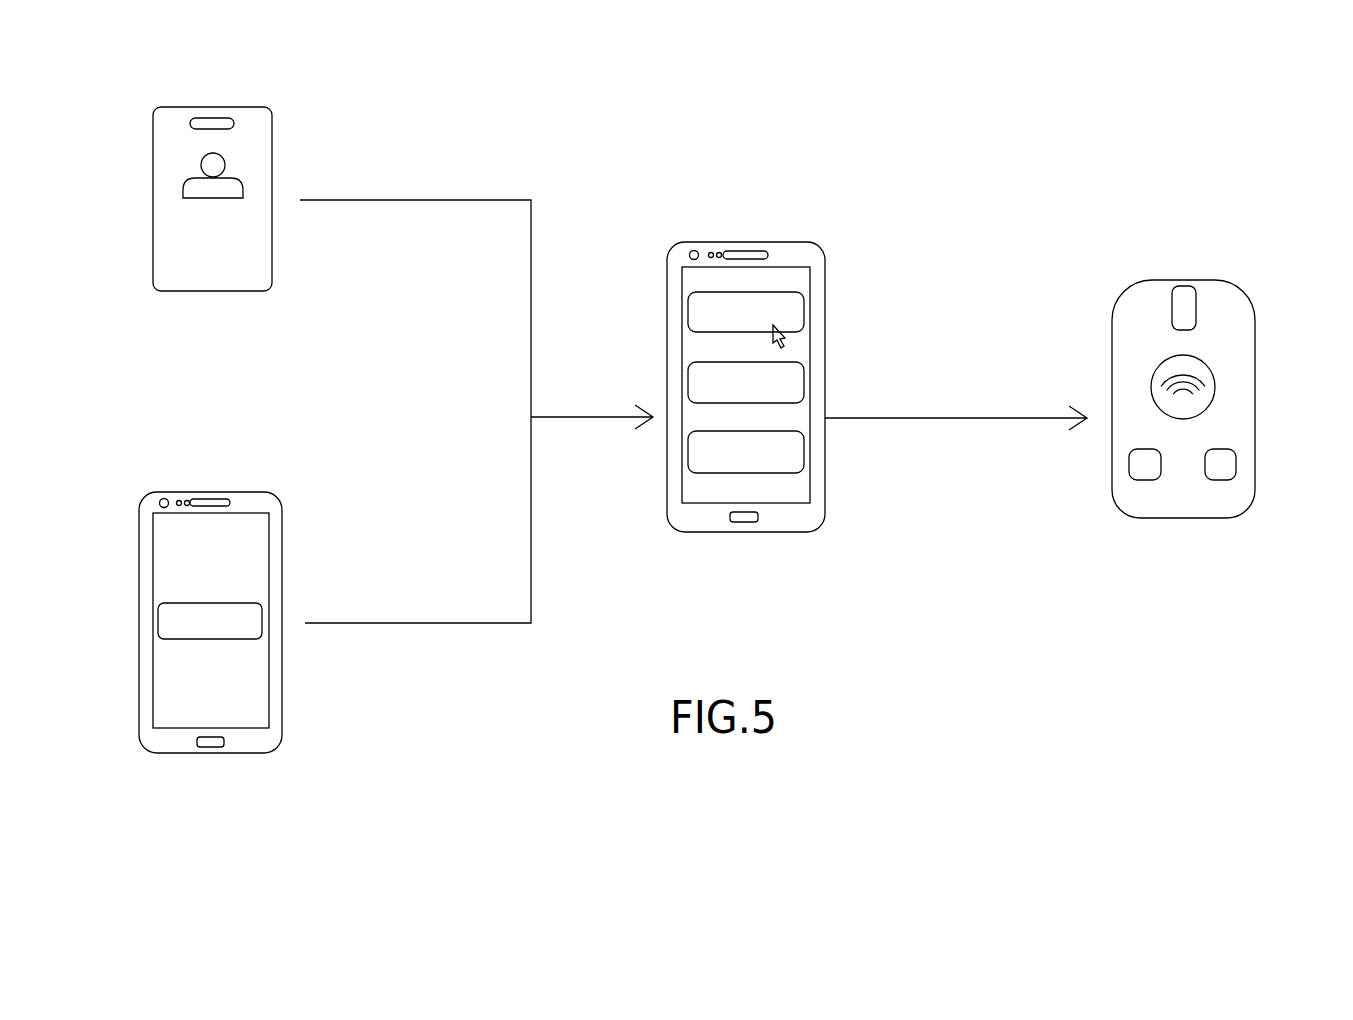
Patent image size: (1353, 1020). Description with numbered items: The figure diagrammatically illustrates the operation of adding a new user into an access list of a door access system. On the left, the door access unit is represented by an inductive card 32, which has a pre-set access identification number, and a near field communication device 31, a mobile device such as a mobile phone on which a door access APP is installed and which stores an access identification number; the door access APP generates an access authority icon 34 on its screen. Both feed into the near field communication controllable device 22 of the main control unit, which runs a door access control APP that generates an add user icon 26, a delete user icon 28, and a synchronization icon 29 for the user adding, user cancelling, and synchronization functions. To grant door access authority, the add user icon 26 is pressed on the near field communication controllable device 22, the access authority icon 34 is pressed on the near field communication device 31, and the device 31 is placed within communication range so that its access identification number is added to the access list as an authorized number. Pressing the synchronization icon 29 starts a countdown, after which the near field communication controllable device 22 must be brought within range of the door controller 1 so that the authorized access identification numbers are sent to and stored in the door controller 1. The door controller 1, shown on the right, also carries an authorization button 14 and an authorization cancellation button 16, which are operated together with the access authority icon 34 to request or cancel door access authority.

The door controller 1 is at (1184, 508).
The authorization button 14 is at (1138, 472).
The authorization cancellation button 16 is at (1225, 472).
The near field communication controllable device 22 is at (787, 250).
The add user icon 26 is at (793, 305).
The delete user icon 28 is at (793, 372).
The synchronization icon 29 is at (793, 463).
The near field communication device 31 is at (250, 740).
The inductive card 32 is at (254, 123).
The access authority icon 34 is at (253, 632).